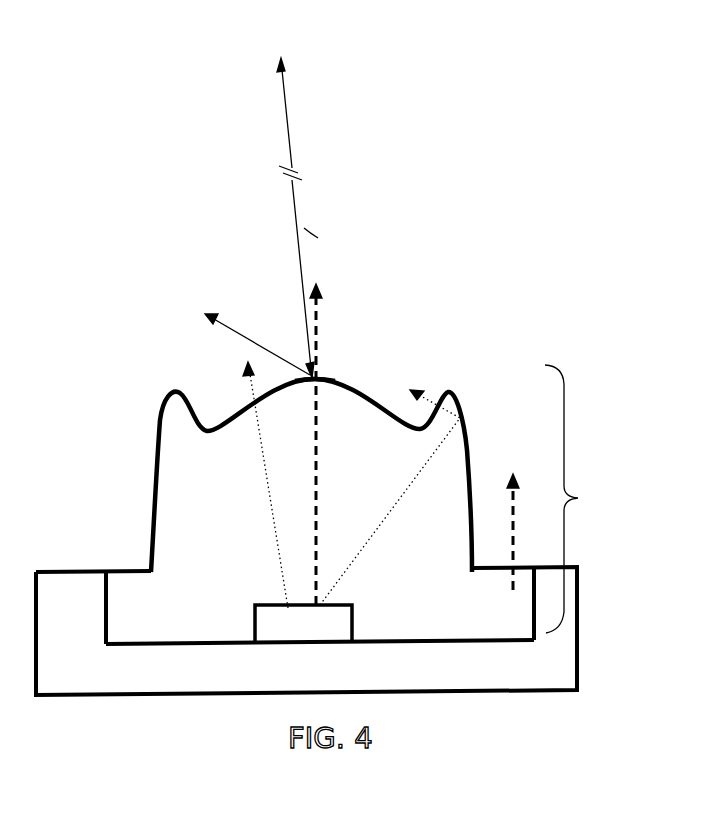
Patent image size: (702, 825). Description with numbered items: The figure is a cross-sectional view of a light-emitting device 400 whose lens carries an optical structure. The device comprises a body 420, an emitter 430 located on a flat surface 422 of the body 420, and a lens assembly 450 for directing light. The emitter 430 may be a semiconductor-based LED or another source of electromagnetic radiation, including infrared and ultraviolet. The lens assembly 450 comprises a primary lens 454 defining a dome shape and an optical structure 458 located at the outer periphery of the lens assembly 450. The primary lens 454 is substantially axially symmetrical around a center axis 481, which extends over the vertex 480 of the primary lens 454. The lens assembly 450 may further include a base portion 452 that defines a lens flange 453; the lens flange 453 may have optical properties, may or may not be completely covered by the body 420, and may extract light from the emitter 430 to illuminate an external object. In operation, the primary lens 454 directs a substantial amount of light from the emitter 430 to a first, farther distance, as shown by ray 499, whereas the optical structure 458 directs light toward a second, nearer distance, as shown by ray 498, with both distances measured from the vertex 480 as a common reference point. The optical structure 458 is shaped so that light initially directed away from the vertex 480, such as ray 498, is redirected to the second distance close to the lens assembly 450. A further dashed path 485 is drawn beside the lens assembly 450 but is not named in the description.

The light-emitting device 400 is at (80, 325).
The body 420 is at (471, 677).
The flat surface 422 is at (387, 637).
The emitter 430 is at (328, 638).
The lens assembly 450 is at (579, 498).
The base portion 452 is at (206, 625).
The lens flange 453 is at (127, 562).
The primary lens 454 is at (292, 475).
The optical structure 458 is at (171, 424).
The vertex 480 is at (311, 384).
The center axis 481 is at (318, 470).
The side light path 485 is at (516, 532).
The ray 498 is at (390, 497).
The ray 499 is at (241, 377).